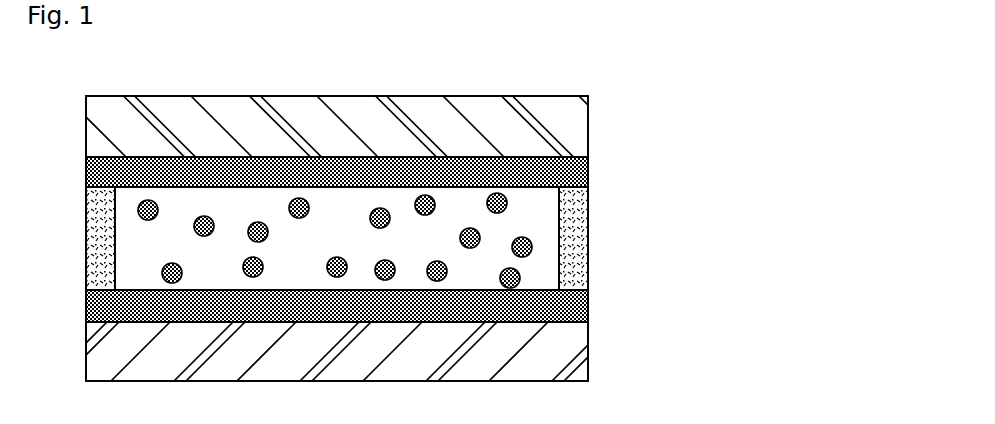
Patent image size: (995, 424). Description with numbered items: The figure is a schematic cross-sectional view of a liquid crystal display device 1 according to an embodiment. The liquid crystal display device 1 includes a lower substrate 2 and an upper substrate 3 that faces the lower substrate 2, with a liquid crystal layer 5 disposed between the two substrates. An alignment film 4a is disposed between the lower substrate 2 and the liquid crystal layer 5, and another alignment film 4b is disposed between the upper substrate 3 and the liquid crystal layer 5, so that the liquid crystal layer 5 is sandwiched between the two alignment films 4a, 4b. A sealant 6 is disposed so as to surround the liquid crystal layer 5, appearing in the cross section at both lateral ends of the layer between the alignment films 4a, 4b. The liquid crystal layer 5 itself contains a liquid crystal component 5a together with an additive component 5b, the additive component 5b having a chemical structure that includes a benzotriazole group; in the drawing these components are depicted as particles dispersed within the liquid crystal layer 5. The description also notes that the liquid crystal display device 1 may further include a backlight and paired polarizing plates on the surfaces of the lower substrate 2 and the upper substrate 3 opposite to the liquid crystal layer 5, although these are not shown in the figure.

The liquid crystal display device 1 is at (58, 95).
The lower substrate 2 is at (577, 358).
The upper substrate 3 is at (577, 128).
The alignment film 4a is at (588, 310).
The alignment film 4b is at (588, 171).
The liquid crystal layer 5 is at (407, 238).
The liquid crystal component 5a is at (523, 207).
The additive component 5b is at (533, 247).
The sealant 6 is at (577, 275).